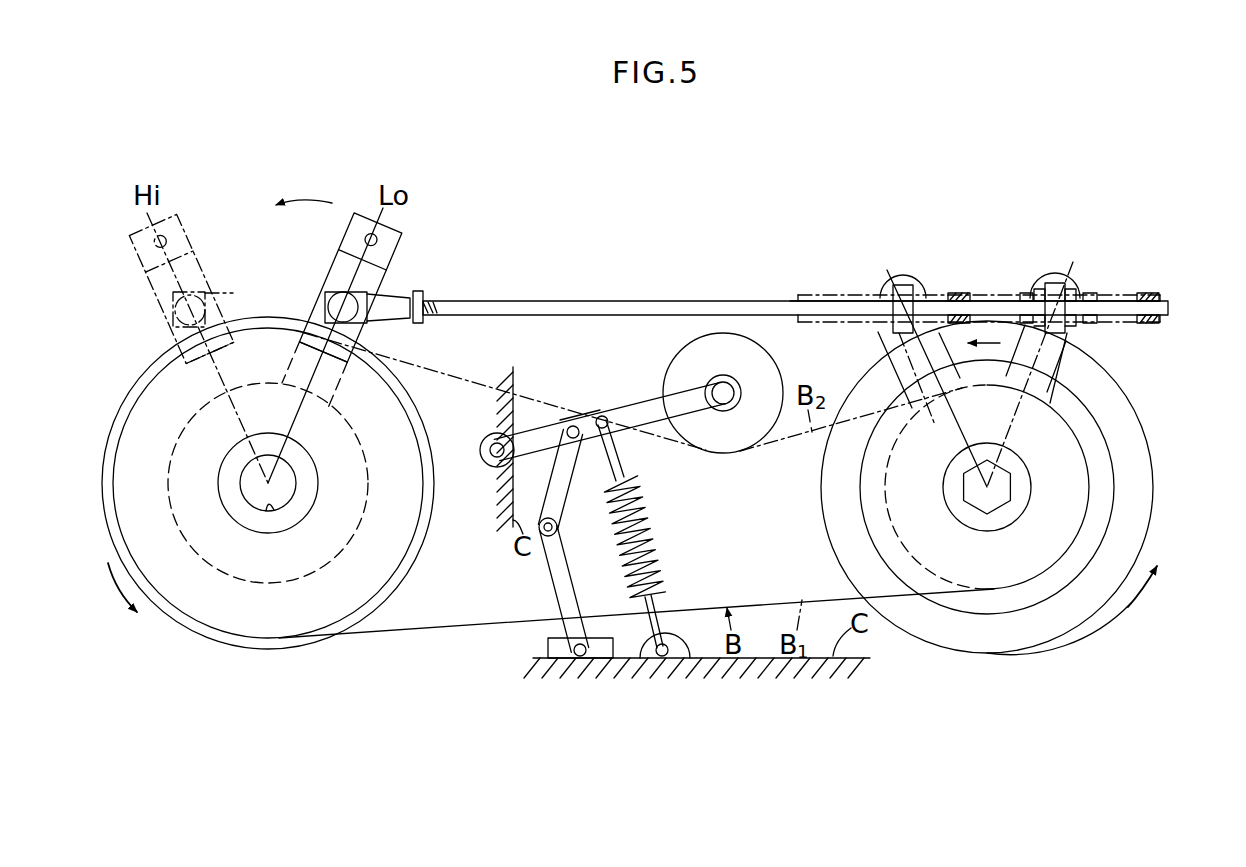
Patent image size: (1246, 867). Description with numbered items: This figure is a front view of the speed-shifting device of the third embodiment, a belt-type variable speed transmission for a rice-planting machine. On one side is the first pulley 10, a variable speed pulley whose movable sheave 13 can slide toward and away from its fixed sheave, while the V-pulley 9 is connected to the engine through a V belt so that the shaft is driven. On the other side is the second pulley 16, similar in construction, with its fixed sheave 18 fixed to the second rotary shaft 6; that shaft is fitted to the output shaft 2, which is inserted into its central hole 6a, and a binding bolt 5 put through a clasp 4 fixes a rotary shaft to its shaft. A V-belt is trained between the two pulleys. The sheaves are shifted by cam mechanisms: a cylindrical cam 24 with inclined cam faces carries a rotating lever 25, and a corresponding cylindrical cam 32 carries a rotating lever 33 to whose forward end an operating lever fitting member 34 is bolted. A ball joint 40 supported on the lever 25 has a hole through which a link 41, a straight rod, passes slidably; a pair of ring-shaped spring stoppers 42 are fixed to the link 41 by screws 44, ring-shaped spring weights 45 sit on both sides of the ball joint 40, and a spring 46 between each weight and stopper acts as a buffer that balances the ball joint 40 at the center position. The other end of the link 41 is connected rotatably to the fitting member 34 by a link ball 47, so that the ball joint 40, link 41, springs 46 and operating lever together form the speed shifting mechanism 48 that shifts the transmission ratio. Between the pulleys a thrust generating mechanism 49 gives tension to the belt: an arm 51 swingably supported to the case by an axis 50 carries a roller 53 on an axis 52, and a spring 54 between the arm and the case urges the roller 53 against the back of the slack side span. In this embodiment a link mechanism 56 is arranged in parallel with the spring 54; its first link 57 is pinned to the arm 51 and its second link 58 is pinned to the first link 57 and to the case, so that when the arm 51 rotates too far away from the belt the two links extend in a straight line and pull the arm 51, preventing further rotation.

The output shaft 2 is at (224, 512).
The clasp 4 is at (1031, 462).
The binding bolt 5 is at (1005, 506).
The second rotary shaft 6 is at (312, 490).
The central hole 6a is at (268, 510).
The V-pulley 9 is at (1112, 515).
The first pulley 10 is at (1146, 428).
The movable sheave 13 is at (1071, 630).
The second pulley 16 is at (218, 650).
The fixed sheave 18 is at (402, 585).
The cylindrical cam 24 is at (920, 570).
The rotating lever 25 is at (892, 292).
The cylindrical cam 32 is at (170, 500).
The rotating lever 33 is at (170, 322).
The operating lever fitting member 34 is at (190, 220).
The ball joint 40 is at (903, 284).
The link 41 is at (624, 300).
The spring stoppers 42 is at (800, 293).
The screws 44 is at (958, 292).
The spring weights 45 is at (1040, 290).
The spring 46 is at (1026, 292).
The link ball 47 is at (206, 292).
The speed shifting mechanism 48 is at (678, 280).
The thrust generating mechanism 49 is at (578, 397).
The axis 50 is at (488, 440).
The arm 51 is at (622, 406).
The axis 52 is at (720, 376).
The roller 53 is at (781, 366).
The spring 54 is at (655, 522).
The link mechanism 56 is at (572, 566).
The first link 57 is at (553, 470).
The second link 58 is at (576, 582).